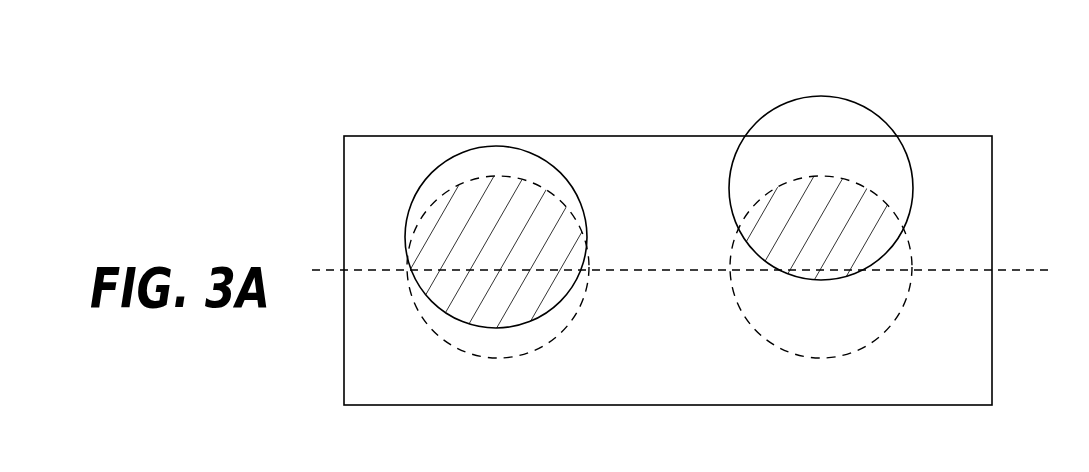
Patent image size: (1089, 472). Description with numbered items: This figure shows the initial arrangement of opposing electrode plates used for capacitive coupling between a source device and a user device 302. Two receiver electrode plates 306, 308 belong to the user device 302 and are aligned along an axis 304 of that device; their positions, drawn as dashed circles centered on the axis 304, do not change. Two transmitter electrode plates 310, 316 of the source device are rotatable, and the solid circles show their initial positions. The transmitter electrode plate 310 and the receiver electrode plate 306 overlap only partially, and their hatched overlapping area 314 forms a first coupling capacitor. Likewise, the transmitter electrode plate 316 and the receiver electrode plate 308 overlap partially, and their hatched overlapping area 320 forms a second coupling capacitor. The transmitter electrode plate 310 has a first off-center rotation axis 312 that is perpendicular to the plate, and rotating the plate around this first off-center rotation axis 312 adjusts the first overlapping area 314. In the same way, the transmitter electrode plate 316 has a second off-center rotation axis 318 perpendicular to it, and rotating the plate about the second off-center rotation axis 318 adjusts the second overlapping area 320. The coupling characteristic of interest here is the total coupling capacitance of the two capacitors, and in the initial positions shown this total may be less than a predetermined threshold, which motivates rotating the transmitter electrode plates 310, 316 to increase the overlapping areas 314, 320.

The user device 302 is at (364, 136).
The axis 304 is at (1018, 270).
The receiver electrode plate 306 is at (535, 183).
The receiver electrode plate 308 is at (817, 177).
The transmitter electrode plate 310 is at (463, 151).
The first off-center rotation axis 312 is at (563, 213).
The first overlapping area 314 is at (527, 222).
The transmitter electrode plate 316 is at (757, 123).
The second off-center rotation axis 318 is at (890, 173).
The second overlapping area 320 is at (857, 220).